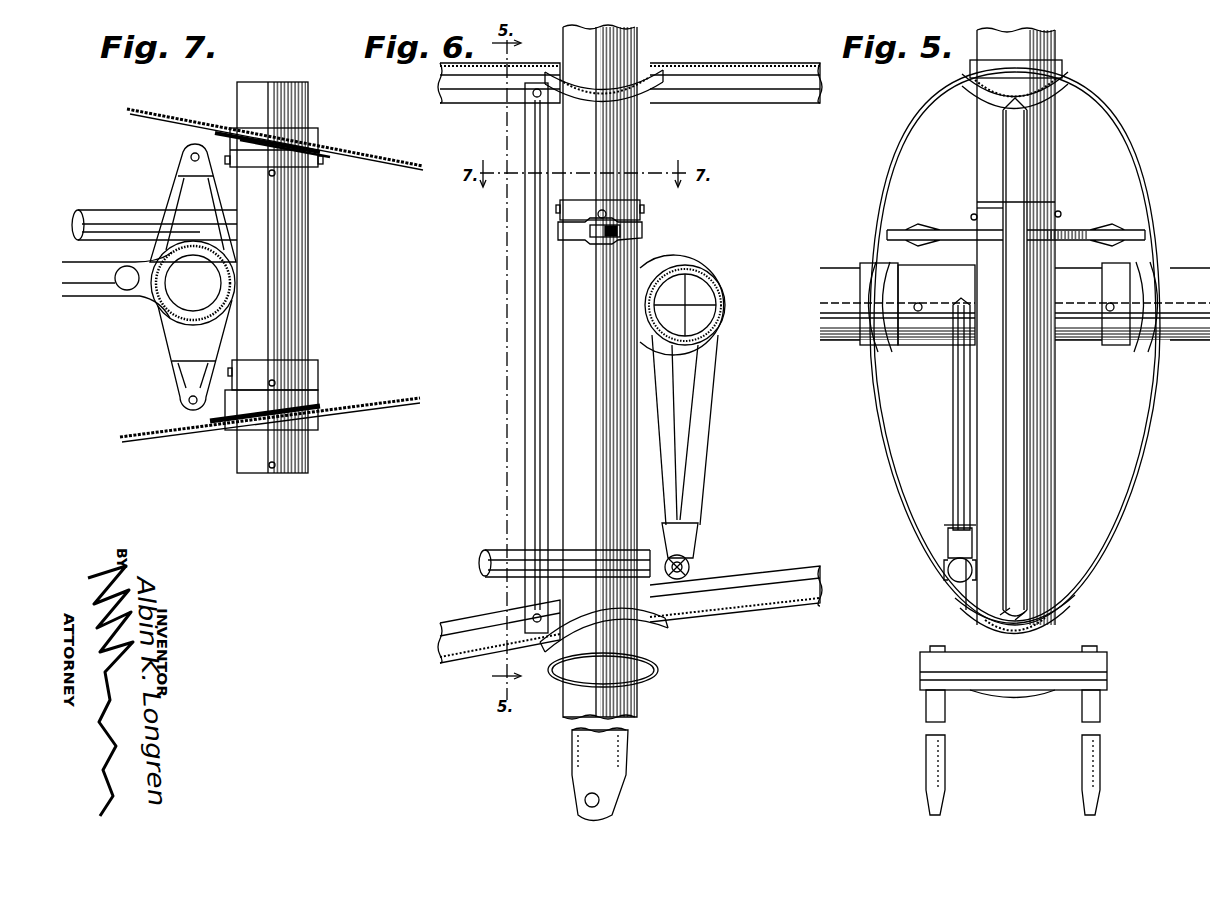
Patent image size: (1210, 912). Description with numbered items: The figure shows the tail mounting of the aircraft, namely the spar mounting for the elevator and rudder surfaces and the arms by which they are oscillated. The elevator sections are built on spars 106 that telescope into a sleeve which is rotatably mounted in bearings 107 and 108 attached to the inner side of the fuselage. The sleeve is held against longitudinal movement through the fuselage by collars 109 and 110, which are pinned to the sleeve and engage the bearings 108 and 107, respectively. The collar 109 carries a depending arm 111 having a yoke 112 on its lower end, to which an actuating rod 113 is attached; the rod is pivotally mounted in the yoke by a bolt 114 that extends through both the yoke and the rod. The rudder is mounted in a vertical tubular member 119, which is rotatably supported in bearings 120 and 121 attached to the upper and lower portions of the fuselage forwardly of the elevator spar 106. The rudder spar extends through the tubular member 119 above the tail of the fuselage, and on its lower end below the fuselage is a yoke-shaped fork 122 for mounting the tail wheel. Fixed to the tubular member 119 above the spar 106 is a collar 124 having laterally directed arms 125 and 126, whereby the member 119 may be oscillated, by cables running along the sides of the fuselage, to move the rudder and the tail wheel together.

In FIG. 7, the spar 106 is at (308, 302).
In FIG. 6, the spar 106 is at (700, 253).
In FIG. 5, the spar 106 is at (1082, 282).
In FIG. 7, the bearing 107 is at (328, 388).
In FIG. 5, the bearing 107 is at (1155, 270).
In FIG. 7, the bearing 108 is at (318, 142).
In FIG. 6, the bearing 108 is at (722, 315).
In FIG. 5, the bearing 108 is at (876, 270).
In FIG. 7, the collar 109 is at (318, 212).
In FIG. 6, the collar 109 is at (720, 283).
In FIG. 5, the collar 109 is at (935, 347).
In FIG. 7, the collar 110 is at (328, 360).
In FIG. 5, the collar 110 is at (1105, 347).
In FIG. 6, the depending arm 111 is at (703, 437).
In FIG. 5, the depending arm 111 is at (950, 418).
In FIG. 6, the yoke 112 is at (690, 538).
In FIG. 5, the yoke 112 is at (948, 548).
In FIG. 7, the actuating rod 113 is at (125, 210).
In FIG. 6, the actuating rod 113 is at (497, 552).
In FIG. 5, the actuating rod 113 is at (940, 595).
In FIG. 6, the bolt 114 is at (688, 562).
In FIG. 5, the bolt 114 is at (948, 570).
In FIG. 6, the tubular member 119 is at (637, 45).
In FIG. 5, the tubular member 119 is at (1055, 45).
In FIG. 6, the bearing 120 is at (650, 90).
In FIG. 5, the bearing 120 is at (1060, 75).
In FIG. 7, the bearing 121 is at (118, 292).
In FIG. 6, the bearing 121 is at (655, 628).
In FIG. 5, the bearing 121 is at (1058, 630).
In FIG. 6, the yoke-shaped fork 122 is at (656, 668).
In FIG. 5, the yoke-shaped fork 122 is at (1107, 672).
In FIG. 7, the collar 124 is at (157, 295).
In FIG. 6, the collar 124 is at (640, 203).
In FIG. 5, the collar 124 is at (1060, 208).
In FIG. 7, the arm 125 is at (186, 170).
In FIG. 5, the arm 125 is at (932, 220).
In FIG. 7, the arm 126 is at (182, 388).
In FIG. 6, the arm 126 is at (642, 226).
In FIG. 5, the arm 126 is at (1122, 229).